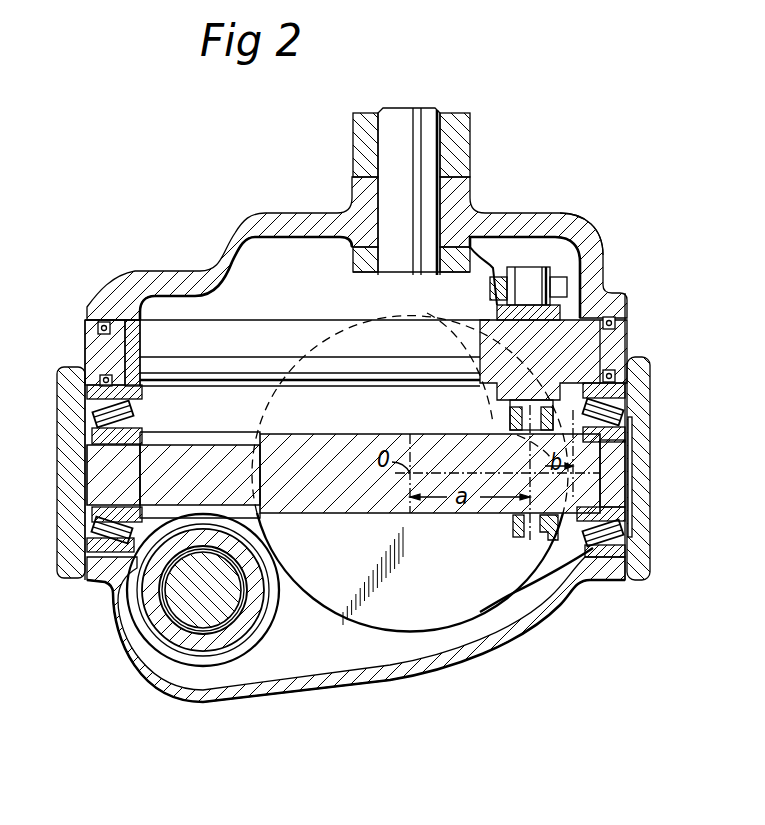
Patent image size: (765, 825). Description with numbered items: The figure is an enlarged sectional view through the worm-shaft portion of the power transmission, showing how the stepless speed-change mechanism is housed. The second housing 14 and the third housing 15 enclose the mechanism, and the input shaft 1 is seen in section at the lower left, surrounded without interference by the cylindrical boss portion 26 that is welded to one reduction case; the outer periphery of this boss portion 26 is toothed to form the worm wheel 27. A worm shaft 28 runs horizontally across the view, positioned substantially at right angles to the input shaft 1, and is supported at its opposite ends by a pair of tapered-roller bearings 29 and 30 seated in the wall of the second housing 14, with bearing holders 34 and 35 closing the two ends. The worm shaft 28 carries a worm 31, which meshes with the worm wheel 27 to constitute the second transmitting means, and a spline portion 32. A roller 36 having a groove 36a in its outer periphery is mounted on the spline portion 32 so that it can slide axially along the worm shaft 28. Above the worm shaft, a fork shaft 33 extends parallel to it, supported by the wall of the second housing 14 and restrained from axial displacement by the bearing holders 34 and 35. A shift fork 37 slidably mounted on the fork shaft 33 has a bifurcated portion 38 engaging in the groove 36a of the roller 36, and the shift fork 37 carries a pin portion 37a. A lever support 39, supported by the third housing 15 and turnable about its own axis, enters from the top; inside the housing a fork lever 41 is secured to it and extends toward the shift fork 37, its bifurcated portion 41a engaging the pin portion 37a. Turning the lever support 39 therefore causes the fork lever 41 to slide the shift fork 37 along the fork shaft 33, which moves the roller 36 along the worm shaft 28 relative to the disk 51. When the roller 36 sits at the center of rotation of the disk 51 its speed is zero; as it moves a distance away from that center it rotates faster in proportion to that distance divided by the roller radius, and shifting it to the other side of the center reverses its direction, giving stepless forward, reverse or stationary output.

The input shaft 1 is at (238, 604).
The second housing 14 is at (447, 668).
The third housing 15 is at (541, 213).
The cylindrical boss portion 26 is at (205, 646).
The worm wheel 27 is at (237, 656).
The worm shaft 28 is at (97, 482).
The tapered-roller bearing 29 is at (92, 546).
The tapered-roller bearing 30 is at (612, 552).
The worm 31 is at (200, 444).
The spline portion 32 is at (358, 434).
The fork shaft 33 is at (270, 328).
The bearing holder 34 is at (80, 376).
The bearing holder 35 is at (651, 458).
The roller 36 is at (512, 525).
The groove 36a is at (527, 535).
The shift fork 37 is at (617, 294).
The pin portion 37a is at (597, 229).
The bifurcated portion 38 is at (498, 434).
The lever support 39 is at (410, 108).
The fork lever 41 is at (462, 270).
The bifurcated portion 41a is at (567, 285).
The disk 51 is at (477, 615).